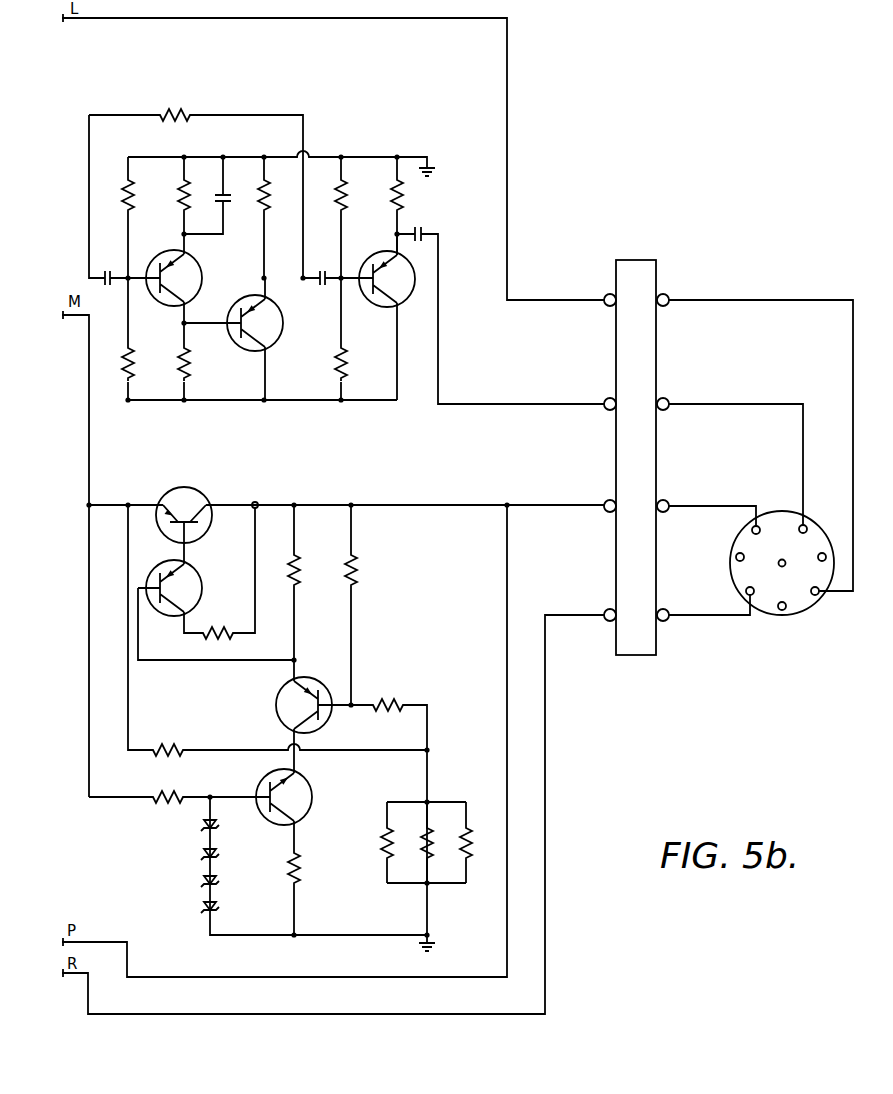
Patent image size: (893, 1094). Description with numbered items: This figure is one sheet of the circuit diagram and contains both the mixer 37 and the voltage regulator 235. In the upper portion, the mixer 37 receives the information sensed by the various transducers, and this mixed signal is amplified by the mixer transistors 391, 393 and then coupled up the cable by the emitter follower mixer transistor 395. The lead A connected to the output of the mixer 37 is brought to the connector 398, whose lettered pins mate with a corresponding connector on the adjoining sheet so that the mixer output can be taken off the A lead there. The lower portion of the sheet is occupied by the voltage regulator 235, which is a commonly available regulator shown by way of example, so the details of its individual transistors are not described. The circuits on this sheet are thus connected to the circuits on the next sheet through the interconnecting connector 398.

The mixer 37 is at (358, 134).
The mixer transistor 391 is at (200, 269).
The mixer transistor 393 is at (283, 323).
The emitter follower mixer transistor 395 is at (414, 283).
The voltage regulator 235 is at (395, 590).
The connector 398 is at (775, 511).